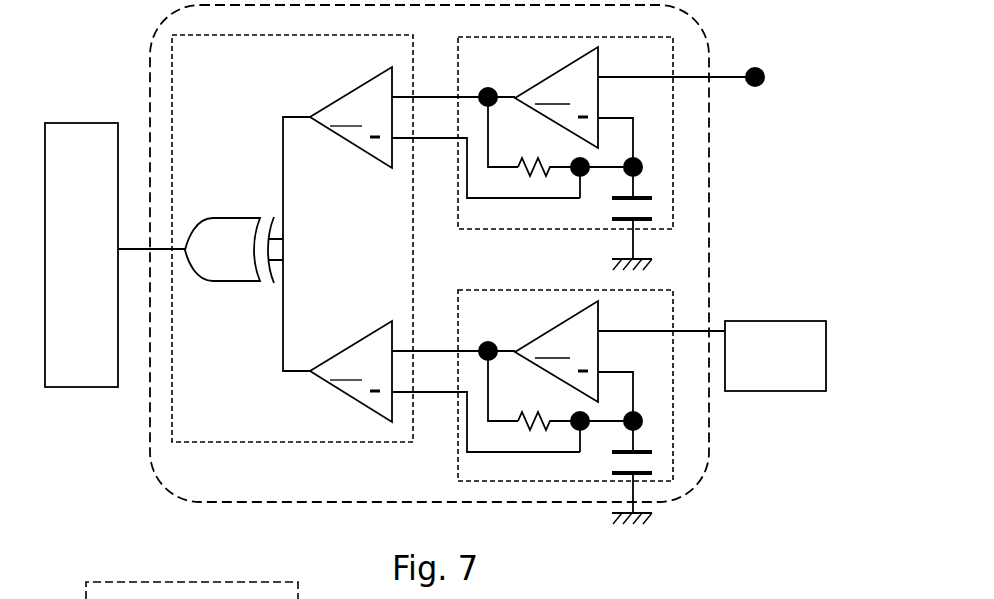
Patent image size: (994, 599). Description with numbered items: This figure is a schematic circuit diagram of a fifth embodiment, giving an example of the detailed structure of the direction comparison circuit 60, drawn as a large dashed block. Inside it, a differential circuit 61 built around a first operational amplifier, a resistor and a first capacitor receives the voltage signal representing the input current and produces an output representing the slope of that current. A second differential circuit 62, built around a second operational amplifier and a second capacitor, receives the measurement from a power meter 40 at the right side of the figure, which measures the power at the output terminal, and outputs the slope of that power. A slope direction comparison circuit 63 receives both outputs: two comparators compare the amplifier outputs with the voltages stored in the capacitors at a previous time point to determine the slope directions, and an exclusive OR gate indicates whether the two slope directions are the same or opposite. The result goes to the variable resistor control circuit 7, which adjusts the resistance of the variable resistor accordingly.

The variable resistor control circuit 7 is at (80, 388).
The power meter 40 is at (762, 302).
The direction comparison circuit 60 is at (708, 444).
The differential circuit 61 is at (505, 71).
The differential circuit 62 is at (505, 325).
The slope direction comparison circuit 63 is at (216, 72).